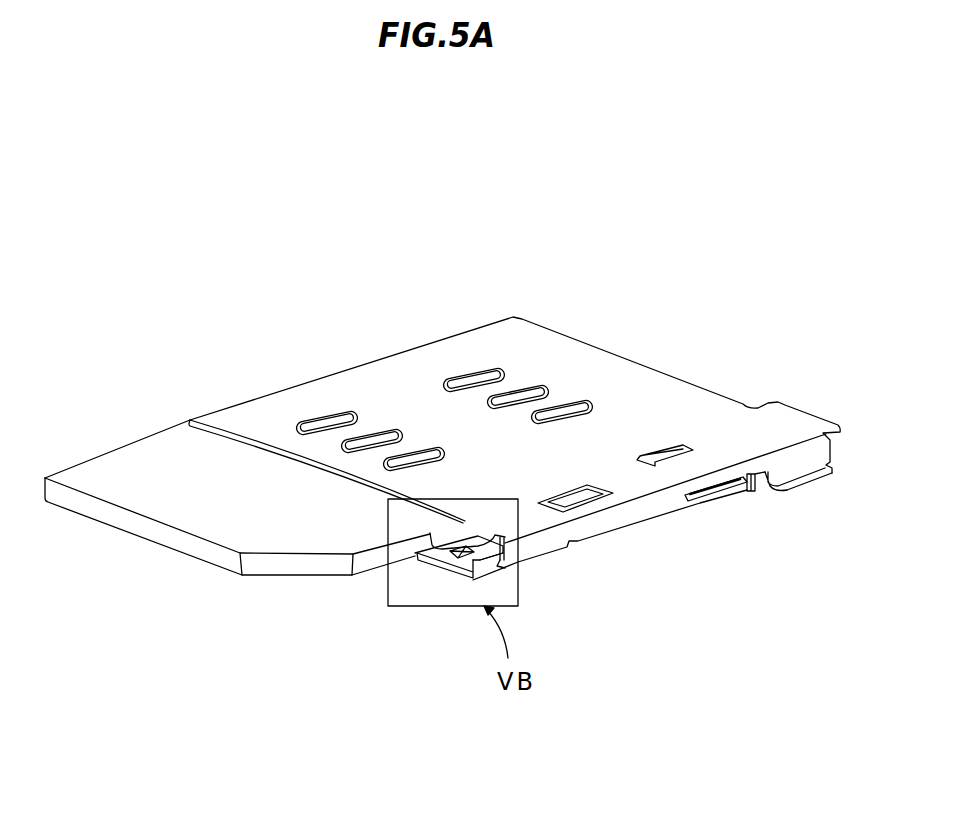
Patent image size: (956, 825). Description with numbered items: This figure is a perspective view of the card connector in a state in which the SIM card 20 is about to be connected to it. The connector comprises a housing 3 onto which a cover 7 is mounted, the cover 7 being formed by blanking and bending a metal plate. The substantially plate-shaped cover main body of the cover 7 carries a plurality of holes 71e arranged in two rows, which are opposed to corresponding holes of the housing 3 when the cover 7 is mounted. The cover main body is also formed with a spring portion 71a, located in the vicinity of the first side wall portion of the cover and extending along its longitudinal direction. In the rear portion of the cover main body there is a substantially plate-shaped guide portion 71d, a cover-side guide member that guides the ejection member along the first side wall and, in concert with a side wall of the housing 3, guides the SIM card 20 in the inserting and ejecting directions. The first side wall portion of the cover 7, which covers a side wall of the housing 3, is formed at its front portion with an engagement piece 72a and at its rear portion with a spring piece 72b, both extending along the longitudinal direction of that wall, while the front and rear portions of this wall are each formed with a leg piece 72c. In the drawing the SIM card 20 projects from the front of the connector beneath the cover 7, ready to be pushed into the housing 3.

The SIM card 20 is at (103, 453).
The cover 7 is at (376, 360).
The holes 71e is at (432, 456).
The guide portion 71d is at (663, 450).
The spring portion 71a is at (582, 500).
The spring piece 72b is at (730, 490).
The leg piece 72c is at (807, 480).
The engagement piece 72a is at (491, 570).
The housing 3 is at (416, 561).